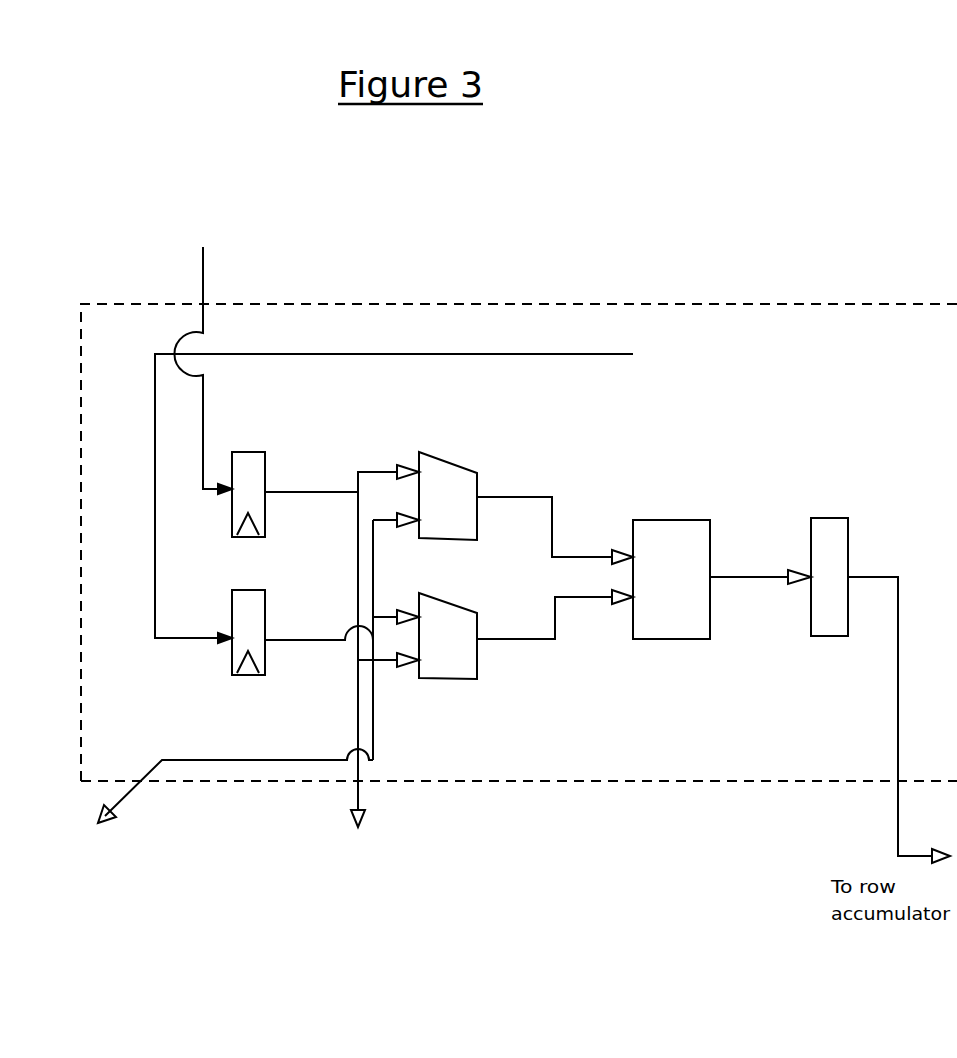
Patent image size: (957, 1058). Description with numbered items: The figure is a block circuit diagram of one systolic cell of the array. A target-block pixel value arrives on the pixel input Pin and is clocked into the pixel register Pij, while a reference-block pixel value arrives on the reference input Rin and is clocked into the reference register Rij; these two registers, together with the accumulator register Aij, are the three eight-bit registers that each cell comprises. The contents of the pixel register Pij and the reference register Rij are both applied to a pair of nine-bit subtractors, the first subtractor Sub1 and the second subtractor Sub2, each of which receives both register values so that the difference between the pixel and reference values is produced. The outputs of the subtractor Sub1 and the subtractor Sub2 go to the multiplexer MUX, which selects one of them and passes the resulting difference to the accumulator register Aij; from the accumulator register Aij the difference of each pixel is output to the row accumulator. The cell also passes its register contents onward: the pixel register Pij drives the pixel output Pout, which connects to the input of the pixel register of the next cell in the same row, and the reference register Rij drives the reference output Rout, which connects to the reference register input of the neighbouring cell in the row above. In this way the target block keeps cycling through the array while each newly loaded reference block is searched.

The pixel input Pin is at (203, 355).
The reference input Rin is at (641, 338).
The pixel register P[i,j] Pij is at (250, 480).
The reference register R[i,j] Rij is at (250, 618).
The 9 bit subtractor Sub1 is at (448, 496).
The 9 bit subtractor Sub2 is at (448, 636).
The multiplexer MUX is at (671, 579).
The accumulator register A[i,j] Aij is at (829, 561).
The pixel output Pout is at (361, 833).
The reference output Rout is at (222, 803).